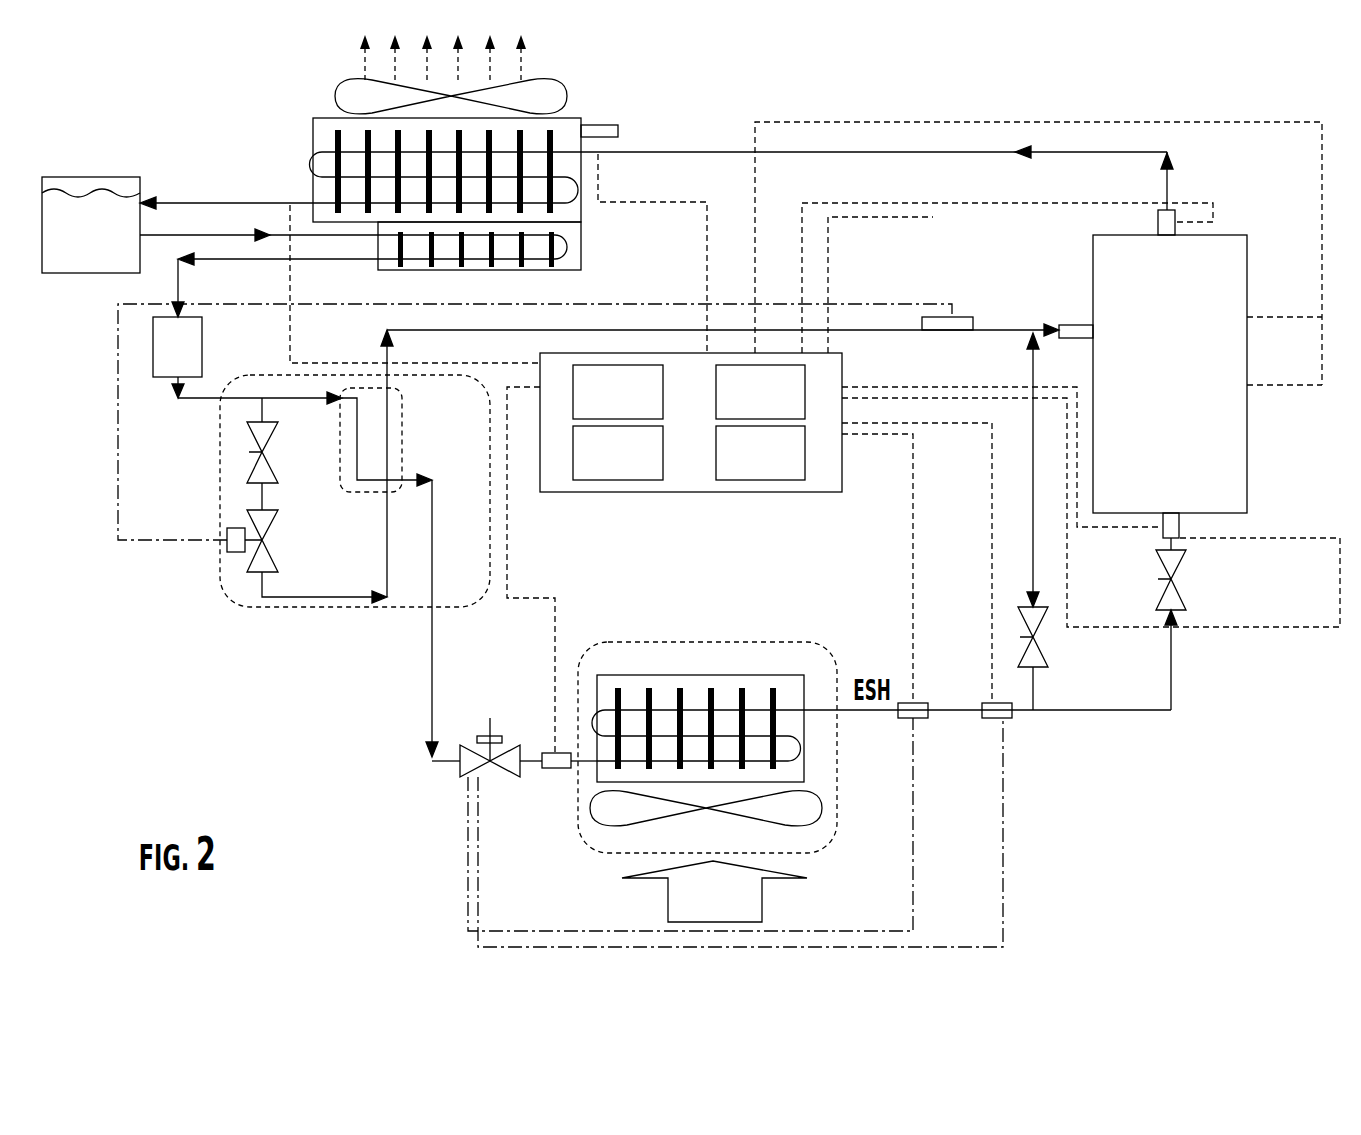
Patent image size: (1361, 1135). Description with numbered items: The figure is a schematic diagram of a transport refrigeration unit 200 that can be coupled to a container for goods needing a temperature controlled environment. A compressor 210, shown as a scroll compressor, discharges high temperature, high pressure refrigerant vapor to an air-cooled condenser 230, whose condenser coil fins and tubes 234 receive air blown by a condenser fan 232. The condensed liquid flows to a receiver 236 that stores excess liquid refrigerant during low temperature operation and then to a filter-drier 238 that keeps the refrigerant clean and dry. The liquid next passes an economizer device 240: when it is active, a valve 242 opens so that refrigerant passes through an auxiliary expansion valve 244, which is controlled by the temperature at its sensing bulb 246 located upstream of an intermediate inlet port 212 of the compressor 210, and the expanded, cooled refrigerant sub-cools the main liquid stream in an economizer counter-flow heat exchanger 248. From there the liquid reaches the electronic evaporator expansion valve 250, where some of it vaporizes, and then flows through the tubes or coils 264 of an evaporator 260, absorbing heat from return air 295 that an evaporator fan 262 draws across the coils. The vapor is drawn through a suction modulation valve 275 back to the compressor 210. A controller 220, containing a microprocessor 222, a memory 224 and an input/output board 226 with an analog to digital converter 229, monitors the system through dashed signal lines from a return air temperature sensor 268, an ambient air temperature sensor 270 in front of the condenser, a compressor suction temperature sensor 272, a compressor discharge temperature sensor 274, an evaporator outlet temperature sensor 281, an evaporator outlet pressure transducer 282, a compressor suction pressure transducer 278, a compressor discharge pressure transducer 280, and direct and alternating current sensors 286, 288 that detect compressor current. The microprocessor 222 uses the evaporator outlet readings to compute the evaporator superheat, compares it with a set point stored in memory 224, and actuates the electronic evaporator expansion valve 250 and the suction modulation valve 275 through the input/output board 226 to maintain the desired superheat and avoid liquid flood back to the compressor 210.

The transport refrigeration unit 200 is at (1330, 762).
The compressor 210 is at (1228, 506).
The intermediate inlet port 212 is at (1075, 325).
The controller 220 is at (691, 452).
The microprocessor 222 is at (744, 407).
The memory 224 is at (744, 468).
The input/output board 226 is at (602, 407).
The analog to digital converter 229 is at (602, 468).
The air-cooled condenser 230 is at (653, 166).
The condenser fan 232 is at (551, 79).
The condenser coil fins and tubes 234 is at (337, 137).
The receiver 236 is at (91, 225).
The filter-drier 238 is at (153, 356).
The economizer device 240 is at (323, 503).
The valve 242 is at (270, 470).
The auxiliary expansion valve 244 is at (270, 558).
The sensing bulb 246 is at (965, 317).
The economizer counter-flow heat exchanger 248 is at (402, 440).
The electronic evaporator expansion valve 250 is at (470, 771).
The evaporator 260 is at (707, 719).
The evaporator fan 262 is at (733, 817).
The evaporator tubes or coils 264 is at (710, 690).
The return air temperature sensor 268 is at (557, 768).
The ambient air temperature sensor 270 is at (885, 249).
The compressor suction temperature sensor 272 is at (922, 387).
The compressor discharge temperature sensor 274 is at (1213, 210).
The suction modulation valve 275 is at (1188, 600).
The compressor suction pressure transducer 278 is at (1295, 627).
The compressor discharge pressure transducer 280 is at (933, 217).
The evaporator outlet temperature sensor 281 is at (1005, 718).
The evaporator outlet pressure transducer 282 is at (921, 718).
The direct current sensor 286 is at (1282, 301).
The alternating current sensor 288 is at (1282, 369).
The return air 295 is at (698, 913).